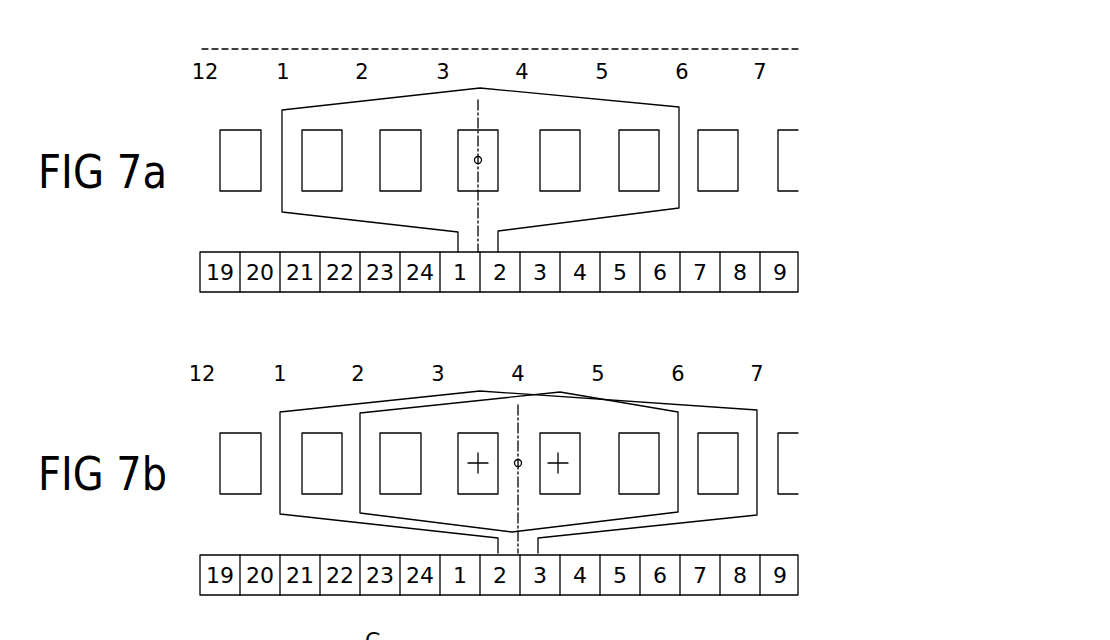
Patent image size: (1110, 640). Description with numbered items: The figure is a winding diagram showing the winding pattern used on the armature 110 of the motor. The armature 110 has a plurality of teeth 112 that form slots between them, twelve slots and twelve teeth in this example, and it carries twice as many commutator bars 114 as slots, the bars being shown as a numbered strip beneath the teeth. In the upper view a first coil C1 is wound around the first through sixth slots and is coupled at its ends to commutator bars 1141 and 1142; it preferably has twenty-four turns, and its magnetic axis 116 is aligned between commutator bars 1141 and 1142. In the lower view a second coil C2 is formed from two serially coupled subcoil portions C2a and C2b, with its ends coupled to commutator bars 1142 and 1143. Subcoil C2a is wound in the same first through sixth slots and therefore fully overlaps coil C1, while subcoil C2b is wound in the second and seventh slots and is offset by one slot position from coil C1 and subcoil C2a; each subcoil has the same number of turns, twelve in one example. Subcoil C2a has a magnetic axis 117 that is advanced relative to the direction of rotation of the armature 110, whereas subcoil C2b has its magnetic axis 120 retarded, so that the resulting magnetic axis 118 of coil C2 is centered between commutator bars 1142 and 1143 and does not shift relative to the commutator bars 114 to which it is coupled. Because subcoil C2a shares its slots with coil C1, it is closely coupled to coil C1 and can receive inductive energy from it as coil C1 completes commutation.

In FIG. 7A, the armature 110 is at (697, 45).
In FIG. 7A, the teeth 112 is at (238, 163).
In FIG. 7B, the teeth 112 is at (229, 463).
In FIG. 7A, the commutator bars 114 is at (770, 298).
In FIG. 7B, the commutator bars 114 is at (499, 575).
In FIG. 7A, the commutator bar 1141 is at (455, 288).
In FIG. 7A, the commutator bar 1142 is at (502, 288).
In FIG. 7B, the commutator bar 1142 is at (507, 595).
In FIG. 7B, the commutator bar 1143 is at (538, 595).
In FIG. 7A, the magnetic axis 116 is at (481, 158).
In FIG. 7B, the magnetic axis 117 is at (472, 463).
In FIG. 7B, the resulting magnetic axis 118 is at (518, 460).
In FIG. 7B, the magnetic axis 120 is at (560, 462).
In FIG. 7A, the first coil C1 is at (350, 99).
In FIG. 7B, the second coil C2 is at (350, 395).
In FIG. 7B, the subcoil C2a is at (280, 412).
In FIG. 7B, the subcoil C2b is at (433, 407).